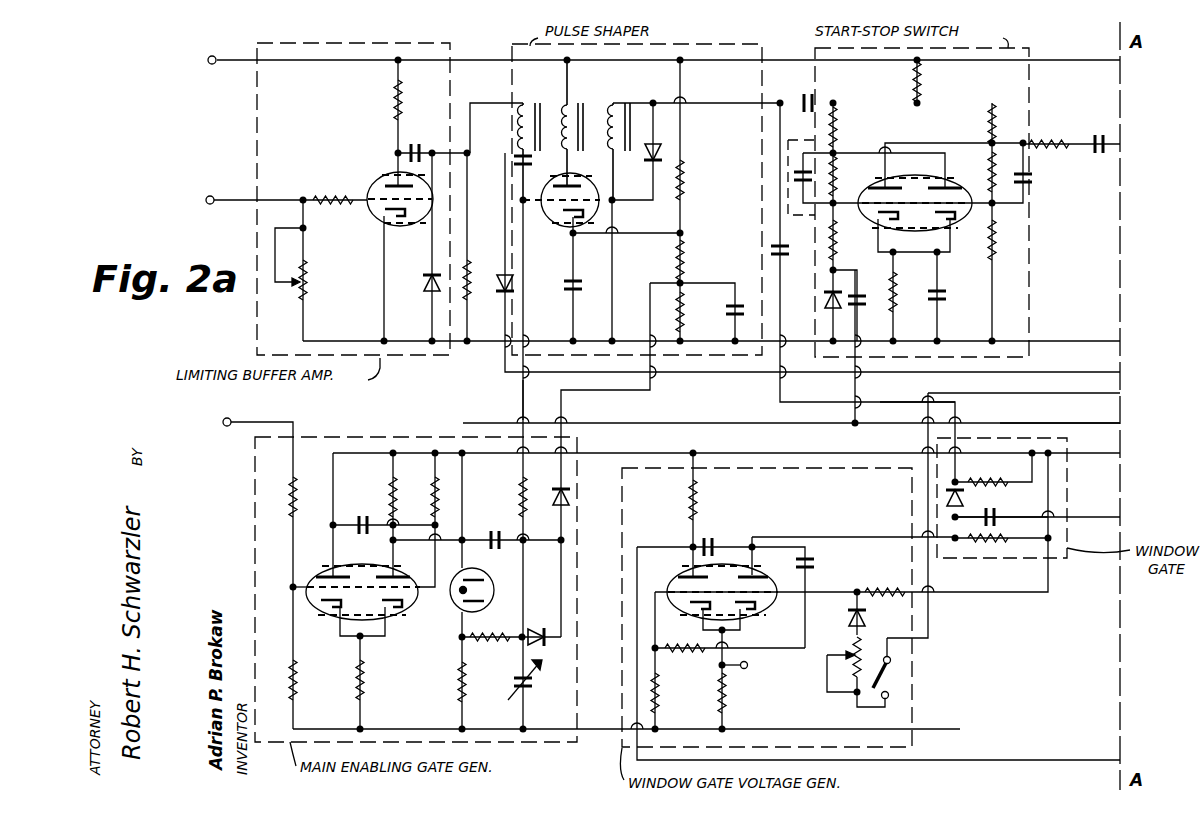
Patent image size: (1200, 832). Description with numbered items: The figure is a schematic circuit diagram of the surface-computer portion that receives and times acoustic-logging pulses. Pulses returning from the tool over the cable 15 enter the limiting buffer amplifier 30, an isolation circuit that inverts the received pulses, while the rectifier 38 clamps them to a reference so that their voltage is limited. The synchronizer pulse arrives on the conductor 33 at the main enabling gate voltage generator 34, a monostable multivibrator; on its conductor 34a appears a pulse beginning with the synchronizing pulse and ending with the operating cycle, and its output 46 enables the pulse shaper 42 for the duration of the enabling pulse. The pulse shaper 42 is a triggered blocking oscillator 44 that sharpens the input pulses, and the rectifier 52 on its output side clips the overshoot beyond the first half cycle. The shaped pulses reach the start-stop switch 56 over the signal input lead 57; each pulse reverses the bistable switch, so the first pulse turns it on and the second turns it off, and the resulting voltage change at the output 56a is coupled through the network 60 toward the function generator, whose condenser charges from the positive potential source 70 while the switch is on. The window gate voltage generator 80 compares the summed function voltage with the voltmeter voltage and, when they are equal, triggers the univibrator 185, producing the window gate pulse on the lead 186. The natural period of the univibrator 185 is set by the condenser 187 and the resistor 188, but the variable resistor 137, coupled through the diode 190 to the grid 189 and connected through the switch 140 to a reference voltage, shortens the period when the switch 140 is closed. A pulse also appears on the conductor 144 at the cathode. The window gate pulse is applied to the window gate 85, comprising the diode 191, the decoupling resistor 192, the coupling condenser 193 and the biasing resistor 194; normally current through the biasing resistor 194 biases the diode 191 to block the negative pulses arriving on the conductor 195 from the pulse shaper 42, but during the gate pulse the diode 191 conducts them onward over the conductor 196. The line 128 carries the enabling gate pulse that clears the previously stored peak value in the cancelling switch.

The cable 15 is at (238, 200).
The limiting buffer amplifier 30 is at (257, 126).
The conductor 33 is at (268, 422).
The main enabling gate voltage generator 34 is at (390, 437).
The conductor 34a is at (430, 540).
The rectifier 38 is at (505, 292).
The pulse shaper 42 is at (516, 46).
The triggered blocking oscillator 44 is at (556, 262).
The output 46 is at (523, 400).
The rectifier 52 is at (651, 165).
The start-stop switch 56 is at (1030, 48).
The output 56a is at (1025, 142).
The signal input lead 57 is at (815, 104).
The network 60 is at (1064, 187).
The positive potential source 70 is at (233, 62).
The window gate voltage generator 80 is at (912, 706).
The window gate 85 is at (1067, 558).
The line 128 is at (1100, 426).
The variable resistor 137 is at (866, 645).
The switch 140 is at (882, 684).
The conductor 144 is at (749, 666).
The univibrator 185 is at (785, 716).
The lead 186 is at (952, 538).
The condenser 187 is at (710, 538).
The resistor 188 is at (898, 586).
The grid 189 is at (782, 616).
The diode 190 is at (848, 612).
The diode 191 is at (947, 500).
The decoupling resistor 192 is at (1008, 480).
The coupling condenser 193 is at (998, 512).
The biasing resistor 194 is at (988, 545).
The conductor 195 is at (955, 406).
The conductor 196 is at (1100, 500).